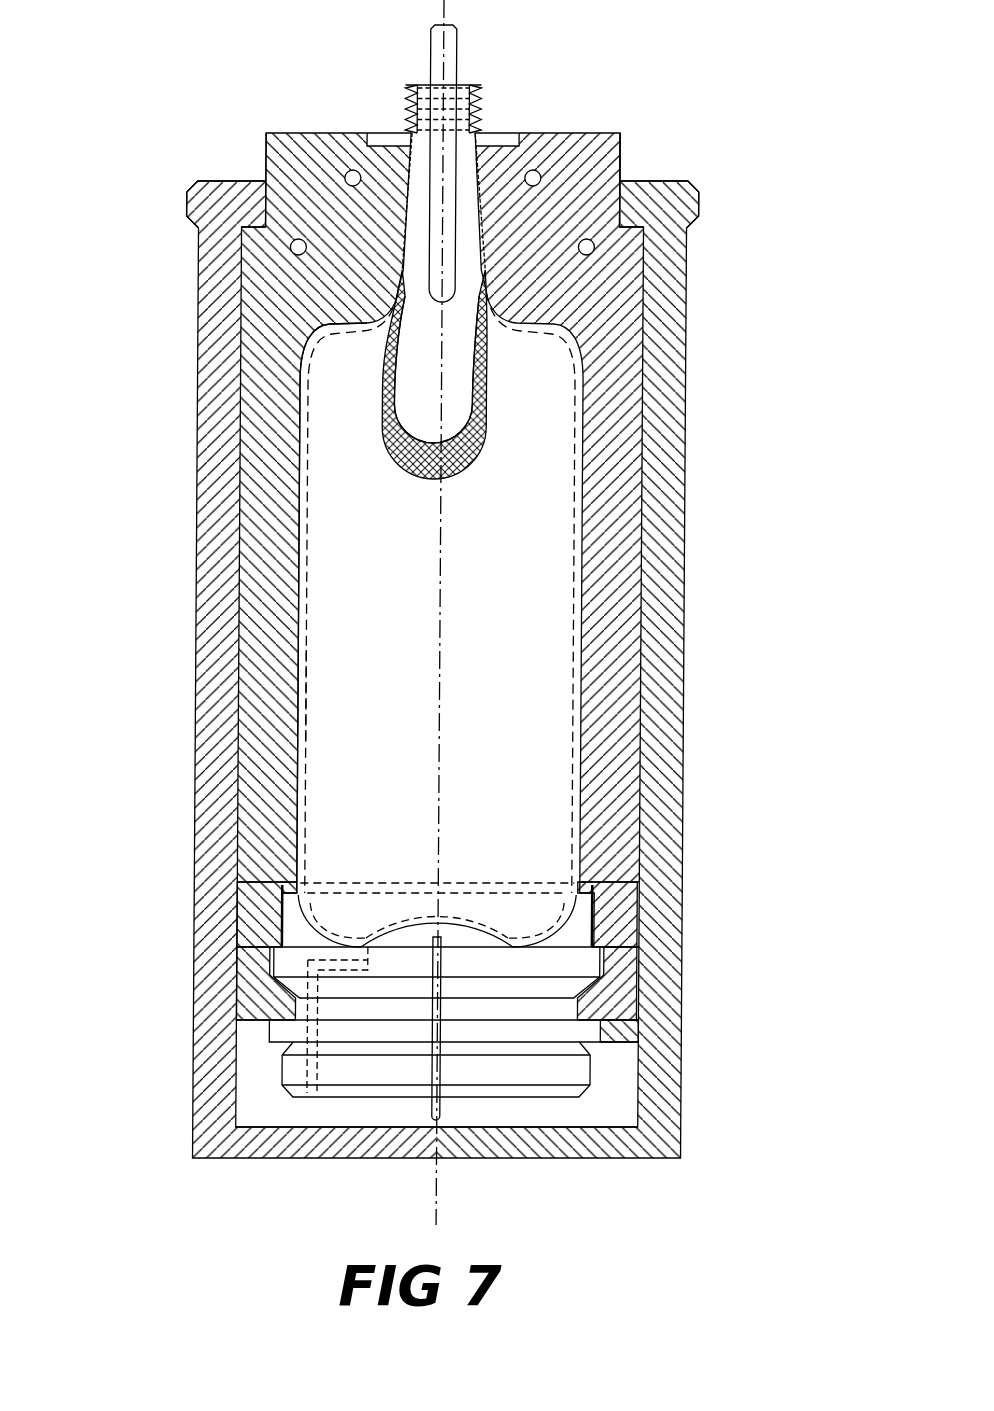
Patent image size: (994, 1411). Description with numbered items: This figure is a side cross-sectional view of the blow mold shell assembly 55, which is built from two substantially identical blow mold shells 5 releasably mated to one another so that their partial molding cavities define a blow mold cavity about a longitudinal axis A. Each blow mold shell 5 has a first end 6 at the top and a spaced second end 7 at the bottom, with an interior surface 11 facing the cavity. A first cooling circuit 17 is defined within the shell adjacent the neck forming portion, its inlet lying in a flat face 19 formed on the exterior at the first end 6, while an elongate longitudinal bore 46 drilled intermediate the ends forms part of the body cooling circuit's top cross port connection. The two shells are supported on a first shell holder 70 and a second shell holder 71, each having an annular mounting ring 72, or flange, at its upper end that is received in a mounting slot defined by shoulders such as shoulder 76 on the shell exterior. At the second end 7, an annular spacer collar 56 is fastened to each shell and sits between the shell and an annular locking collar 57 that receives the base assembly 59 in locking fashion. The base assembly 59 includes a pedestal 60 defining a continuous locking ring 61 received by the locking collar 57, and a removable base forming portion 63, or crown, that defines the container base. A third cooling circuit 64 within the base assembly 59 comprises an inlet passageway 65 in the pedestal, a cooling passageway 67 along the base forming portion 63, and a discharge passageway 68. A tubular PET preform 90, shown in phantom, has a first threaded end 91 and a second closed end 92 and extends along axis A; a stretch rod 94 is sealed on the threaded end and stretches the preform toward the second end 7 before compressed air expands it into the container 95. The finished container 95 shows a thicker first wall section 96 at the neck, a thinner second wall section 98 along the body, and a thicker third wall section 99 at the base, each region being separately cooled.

The blow mold shell 5 is at (265, 322).
The first end 6 is at (318, 150).
The second end 7 is at (268, 863).
The interior surface 11 is at (314, 607).
The first cooling circuit 17 is at (350, 171).
The flat face 19 is at (266, 150).
The longitudinal bore 46 is at (297, 240).
The blow mold shell assembly 55 is at (653, 157).
The annular spacer collar 56 is at (258, 913).
The annular locking collar 57 is at (255, 990).
The base assembly 59 is at (619, 1061).
The pedestal 60 is at (525, 1078).
The continuous locking ring 61 is at (583, 1012).
The base forming portion 63 is at (583, 922).
The third cooling circuit 64 is at (423, 1126).
The inlet passageway 65 is at (447, 1107).
The cooling passageway 67 is at (469, 937).
The discharge passageway 68 is at (318, 1095).
The first shell holder 70 is at (232, 408).
The second shell holder 71 is at (654, 412).
The annular mounting ring 72 is at (190, 200).
The shoulder 76 is at (243, 231).
The PET preform 90 is at (482, 452).
The first threaded end 91 is at (486, 97).
The second closed end 92 is at (438, 481).
The stretch rod 94 is at (458, 52).
The container 95 is at (316, 695).
The first wall section 96 is at (342, 333).
The second wall section 98 is at (308, 795).
The third wall section 99 is at (346, 938).
The longitudinal axis A is at (446, 690).